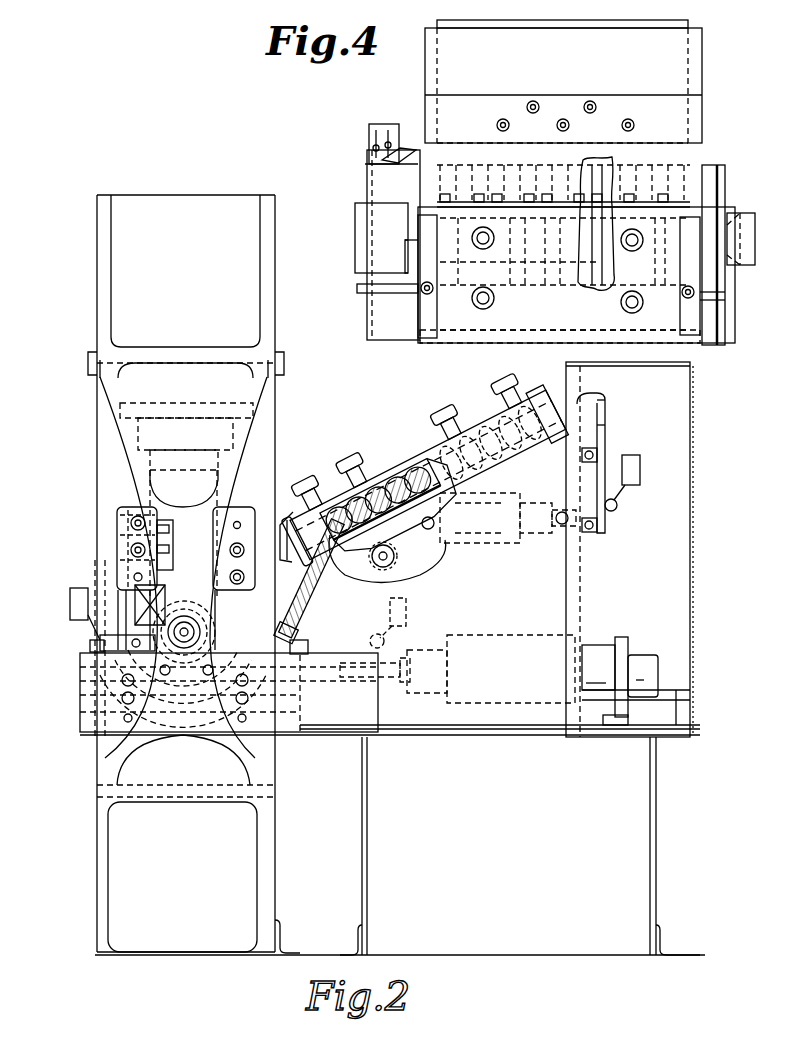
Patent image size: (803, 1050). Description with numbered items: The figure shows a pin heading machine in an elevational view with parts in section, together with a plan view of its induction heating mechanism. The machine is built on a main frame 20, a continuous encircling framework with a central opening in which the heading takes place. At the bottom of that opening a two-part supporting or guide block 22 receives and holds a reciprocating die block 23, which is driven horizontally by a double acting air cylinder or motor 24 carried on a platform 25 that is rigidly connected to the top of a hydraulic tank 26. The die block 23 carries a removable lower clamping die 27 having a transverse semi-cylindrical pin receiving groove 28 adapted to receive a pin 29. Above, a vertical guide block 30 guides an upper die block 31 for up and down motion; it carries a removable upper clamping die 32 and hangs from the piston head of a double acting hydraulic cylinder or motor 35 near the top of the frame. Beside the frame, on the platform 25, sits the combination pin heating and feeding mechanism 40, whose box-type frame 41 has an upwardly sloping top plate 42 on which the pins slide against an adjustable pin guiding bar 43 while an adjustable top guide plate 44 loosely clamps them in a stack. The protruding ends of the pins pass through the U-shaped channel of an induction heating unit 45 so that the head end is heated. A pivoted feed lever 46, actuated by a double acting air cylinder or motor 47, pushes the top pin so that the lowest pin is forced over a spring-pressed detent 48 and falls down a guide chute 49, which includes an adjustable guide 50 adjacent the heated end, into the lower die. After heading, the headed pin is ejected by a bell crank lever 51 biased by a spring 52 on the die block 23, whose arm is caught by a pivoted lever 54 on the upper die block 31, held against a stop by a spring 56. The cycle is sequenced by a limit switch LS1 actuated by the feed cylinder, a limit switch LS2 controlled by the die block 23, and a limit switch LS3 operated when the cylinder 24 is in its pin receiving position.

In FIG. 2, the main frame 20 is at (73, 305).
In FIG. 2, the supporting or guide block 22 is at (85, 715).
In FIG. 2, the reciprocating die block 23 is at (118, 648).
In FIG. 2, the double acting air cylinder or motor 24 is at (598, 650).
In FIG. 2, the platform 25 is at (466, 736).
In FIG. 2, the hydraulic tank 26 is at (400, 846).
In FIG. 2, the lower clamping die 27 is at (138, 605).
In FIG. 2, the transverse semi-cylindrical pin receiving groove 28 is at (298, 625).
In FIG. 4, the pin 29 is at (590, 178).
In FIG. 2, the pin 29 is at (398, 484).
In FIG. 2, the vertical guide block 30 is at (235, 512).
In FIG. 2, the die block 31 is at (128, 560).
In FIG. 2, the upper clamping die 32 is at (157, 580).
In FIG. 2, the double acting hydraulic cylinder or motor 35 is at (185, 408).
In FIG. 4, the pin heating and feeding mechanism 40 is at (358, 100).
In FIG. 2, the pin heating and feeding mechanism 40 is at (562, 566).
In FIG. 2, the frame 41 is at (457, 646).
In FIG. 4, the top plate 42 is at (713, 312).
In FIG. 2, the top plate 42 is at (406, 515).
In FIG. 4, the adjustable pin guiding bar 43 is at (390, 292).
In FIG. 2, the adjustable pin guiding bar 43 is at (308, 505).
In FIG. 4, the adjustable top guide plate 44 is at (487, 337).
In FIG. 2, the adjustable top guide plate 44 is at (362, 497).
In FIG. 4, the induction heating unit 45 is at (563, 81).
In FIG. 4, the pivoted feed lever 46 is at (748, 266).
In FIG. 2, the pivoted feed lever 46 is at (602, 447).
In FIG. 2, the double acting air cylinder or motor 47 is at (470, 545).
In FIG. 4, the spring-pressed detent 48 is at (490, 252).
In FIG. 2, the spring-pressed detent 48 is at (375, 568).
In FIG. 4, the guide chute 49 is at (378, 190).
In FIG. 2, the guide chute 49 is at (278, 540).
In FIG. 4, the adjustable guide 50 is at (385, 138).
In FIG. 2, the bell crank lever 51 is at (125, 625).
In FIG. 2, the spring 52 is at (90, 648).
In FIG. 2, the pivoted lever 54 is at (184, 535).
In FIG. 2, the spring 56 is at (210, 470).
In FIG. 2, the limit switch LS1 is at (640, 470).
In FIG. 2, the limit switch LS2 is at (70, 604).
In FIG. 2, the limit switch LS3 is at (406, 614).